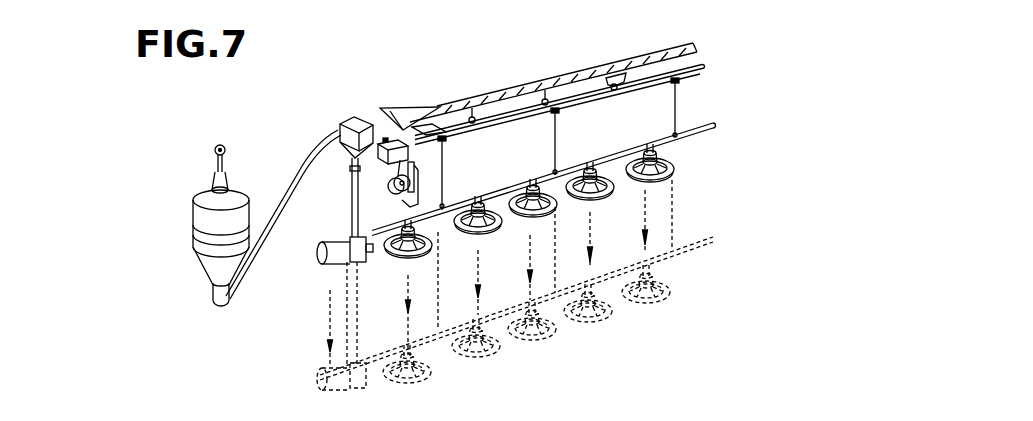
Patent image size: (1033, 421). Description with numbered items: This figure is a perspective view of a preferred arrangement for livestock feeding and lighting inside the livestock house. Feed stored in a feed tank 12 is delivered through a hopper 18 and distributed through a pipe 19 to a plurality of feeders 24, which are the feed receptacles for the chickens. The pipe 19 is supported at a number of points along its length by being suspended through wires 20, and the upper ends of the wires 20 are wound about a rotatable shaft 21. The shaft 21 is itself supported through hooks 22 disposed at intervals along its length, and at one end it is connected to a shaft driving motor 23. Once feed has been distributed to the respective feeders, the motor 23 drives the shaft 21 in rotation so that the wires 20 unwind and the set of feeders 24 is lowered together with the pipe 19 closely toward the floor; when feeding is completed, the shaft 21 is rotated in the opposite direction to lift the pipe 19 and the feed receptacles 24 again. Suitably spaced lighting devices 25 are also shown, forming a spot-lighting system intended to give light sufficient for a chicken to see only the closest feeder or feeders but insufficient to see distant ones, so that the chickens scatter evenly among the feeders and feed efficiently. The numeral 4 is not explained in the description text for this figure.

The overhead track beam 4 is at (566, 72).
The feed tank 12 is at (237, 195).
The hopper 18 is at (353, 117).
The pipe 19 is at (574, 166).
The wires 20 is at (447, 187).
The rotatable shaft 21 is at (522, 118).
The hooks 22 is at (428, 107).
The shaft driving motor 23 is at (386, 164).
The feeders 24 is at (487, 236).
The lighting devices 25 is at (503, 100).